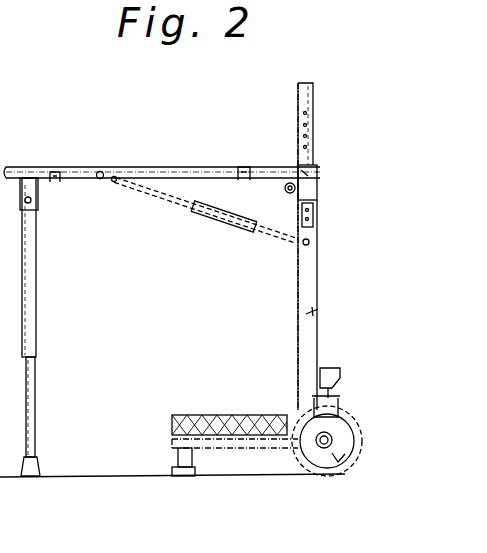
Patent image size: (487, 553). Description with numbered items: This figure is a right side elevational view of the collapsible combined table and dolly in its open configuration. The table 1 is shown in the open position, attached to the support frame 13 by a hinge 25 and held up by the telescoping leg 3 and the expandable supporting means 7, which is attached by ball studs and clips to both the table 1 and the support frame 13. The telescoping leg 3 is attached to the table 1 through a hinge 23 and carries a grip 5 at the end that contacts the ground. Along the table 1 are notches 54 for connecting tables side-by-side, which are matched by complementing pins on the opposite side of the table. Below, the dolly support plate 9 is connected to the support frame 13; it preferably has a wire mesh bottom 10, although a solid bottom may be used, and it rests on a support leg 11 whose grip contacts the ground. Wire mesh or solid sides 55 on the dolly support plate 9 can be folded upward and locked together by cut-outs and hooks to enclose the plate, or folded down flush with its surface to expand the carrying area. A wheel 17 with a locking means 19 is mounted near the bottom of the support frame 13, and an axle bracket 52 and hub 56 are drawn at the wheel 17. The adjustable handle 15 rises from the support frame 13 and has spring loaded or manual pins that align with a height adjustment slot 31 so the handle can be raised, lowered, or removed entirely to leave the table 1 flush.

The table 1 is at (26, 165).
The telescoping leg 3 is at (33, 271).
The grip 5 is at (32, 466).
The expandable supporting means 7 is at (247, 226).
The dolly support plate 9 is at (172, 420).
The wire mesh bottom 10 is at (223, 449).
The support leg 11 is at (178, 458).
The support frame 13 is at (313, 311).
The adjustable handle 15 is at (302, 104).
The wheel 17 is at (342, 477).
The locking means 19 is at (333, 383).
The hinge 23 is at (38, 192).
The hinge 25 is at (284, 186).
The height adjustment slot 31 is at (310, 175).
The axle bracket 52 is at (314, 397).
The notches 54 is at (56, 170).
The wire mesh or solid sides 55 is at (222, 414).
The hub 56 is at (330, 442).